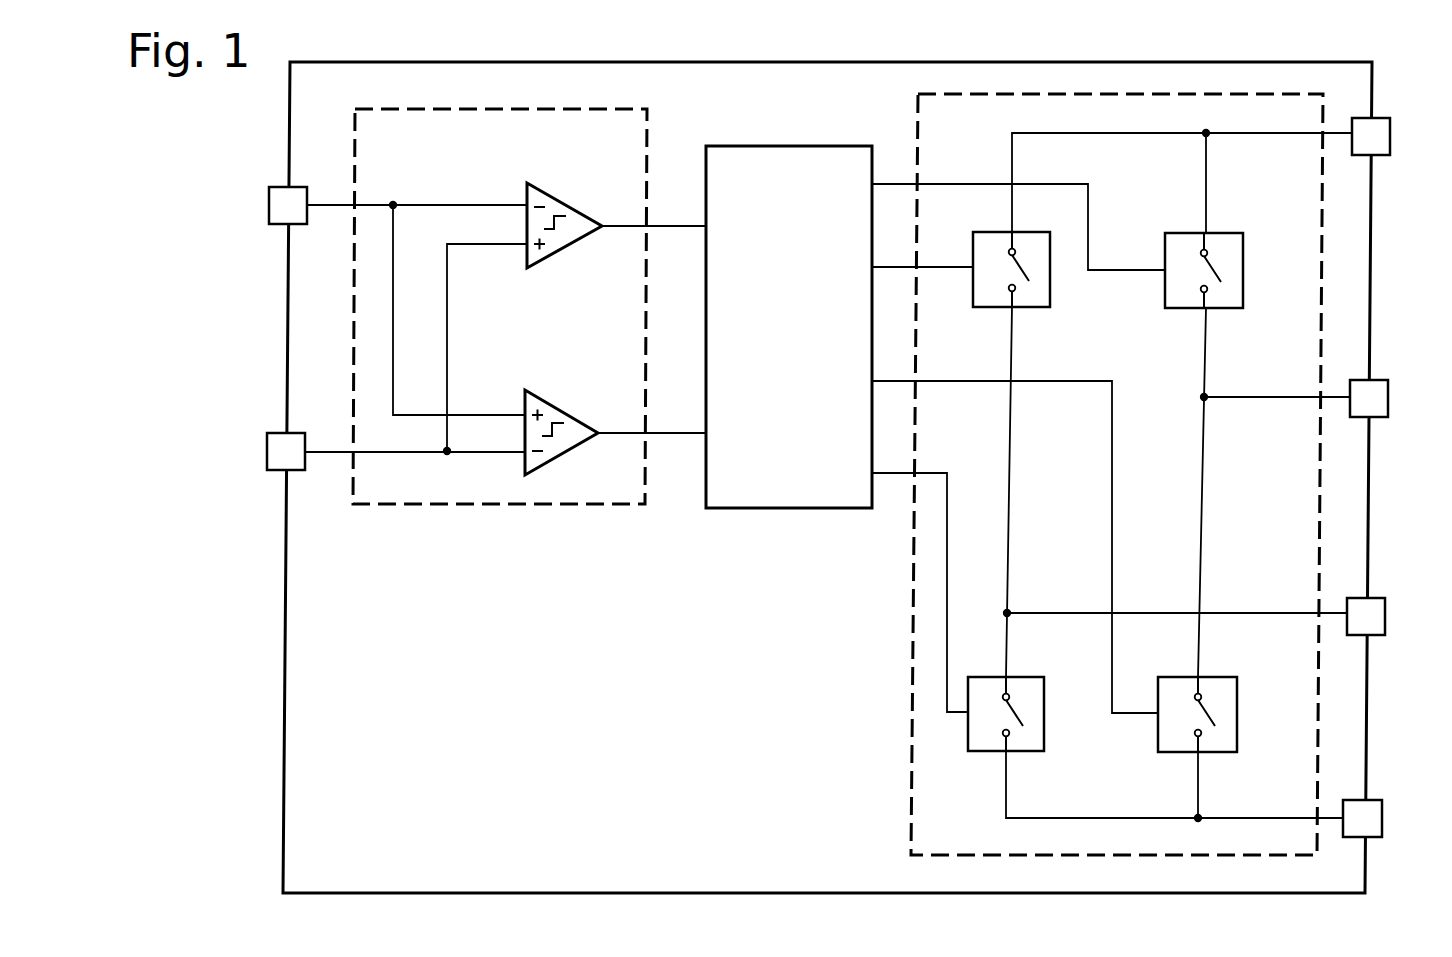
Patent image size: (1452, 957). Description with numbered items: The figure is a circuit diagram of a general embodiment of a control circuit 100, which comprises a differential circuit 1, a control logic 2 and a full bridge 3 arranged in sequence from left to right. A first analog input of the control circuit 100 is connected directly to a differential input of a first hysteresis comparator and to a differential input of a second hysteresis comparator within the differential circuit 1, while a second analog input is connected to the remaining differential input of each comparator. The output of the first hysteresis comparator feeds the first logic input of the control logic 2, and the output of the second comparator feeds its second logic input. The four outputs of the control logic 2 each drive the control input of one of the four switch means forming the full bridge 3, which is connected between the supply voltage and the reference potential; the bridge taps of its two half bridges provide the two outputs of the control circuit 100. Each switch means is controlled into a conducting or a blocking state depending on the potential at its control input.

The differential circuit 1 is at (560, 504).
The control logic 2 is at (777, 508).
The full bridge 3 is at (910, 780).
The control circuit 100 is at (312, 730).